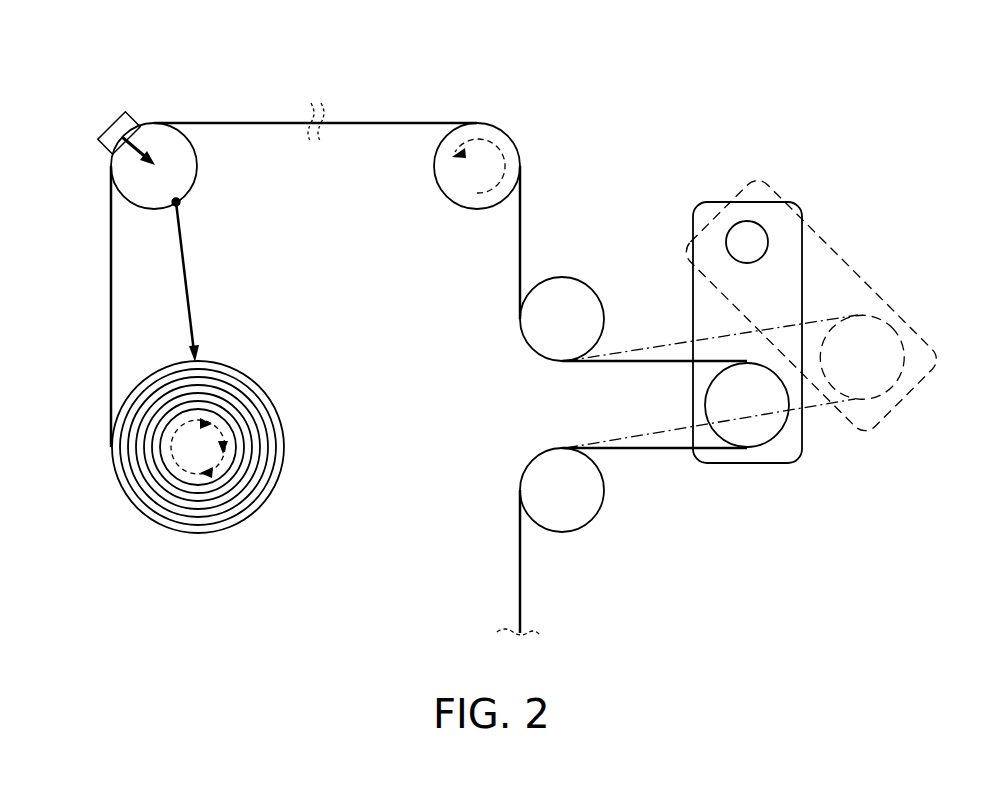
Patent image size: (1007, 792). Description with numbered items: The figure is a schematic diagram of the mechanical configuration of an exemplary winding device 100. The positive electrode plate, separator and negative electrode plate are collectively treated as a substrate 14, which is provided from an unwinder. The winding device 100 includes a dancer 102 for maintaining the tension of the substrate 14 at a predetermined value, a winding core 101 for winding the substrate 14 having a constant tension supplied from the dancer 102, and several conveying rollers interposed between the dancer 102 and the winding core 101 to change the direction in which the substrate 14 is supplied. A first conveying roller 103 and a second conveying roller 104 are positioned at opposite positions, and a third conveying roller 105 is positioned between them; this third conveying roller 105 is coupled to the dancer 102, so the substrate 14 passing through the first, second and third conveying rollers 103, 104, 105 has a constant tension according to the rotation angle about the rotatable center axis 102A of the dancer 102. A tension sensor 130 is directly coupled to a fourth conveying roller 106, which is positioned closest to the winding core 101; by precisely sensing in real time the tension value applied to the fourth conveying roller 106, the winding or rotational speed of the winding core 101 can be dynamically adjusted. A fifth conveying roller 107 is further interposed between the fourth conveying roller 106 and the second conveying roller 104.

The winding device 100 is at (882, 99).
The substrate 14 is at (111, 306).
The winding core 101 is at (198, 480).
The dancer 102 is at (795, 255).
The rotatable center axis 102A is at (745, 225).
The first conveying roller 103 is at (594, 518).
The second conveying roller 104 is at (562, 277).
The third conveying roller 105 is at (746, 450).
The fourth conveying roller 106 is at (198, 177).
The fifth conveying roller 107 is at (503, 133).
The tension sensor 130 is at (113, 128).